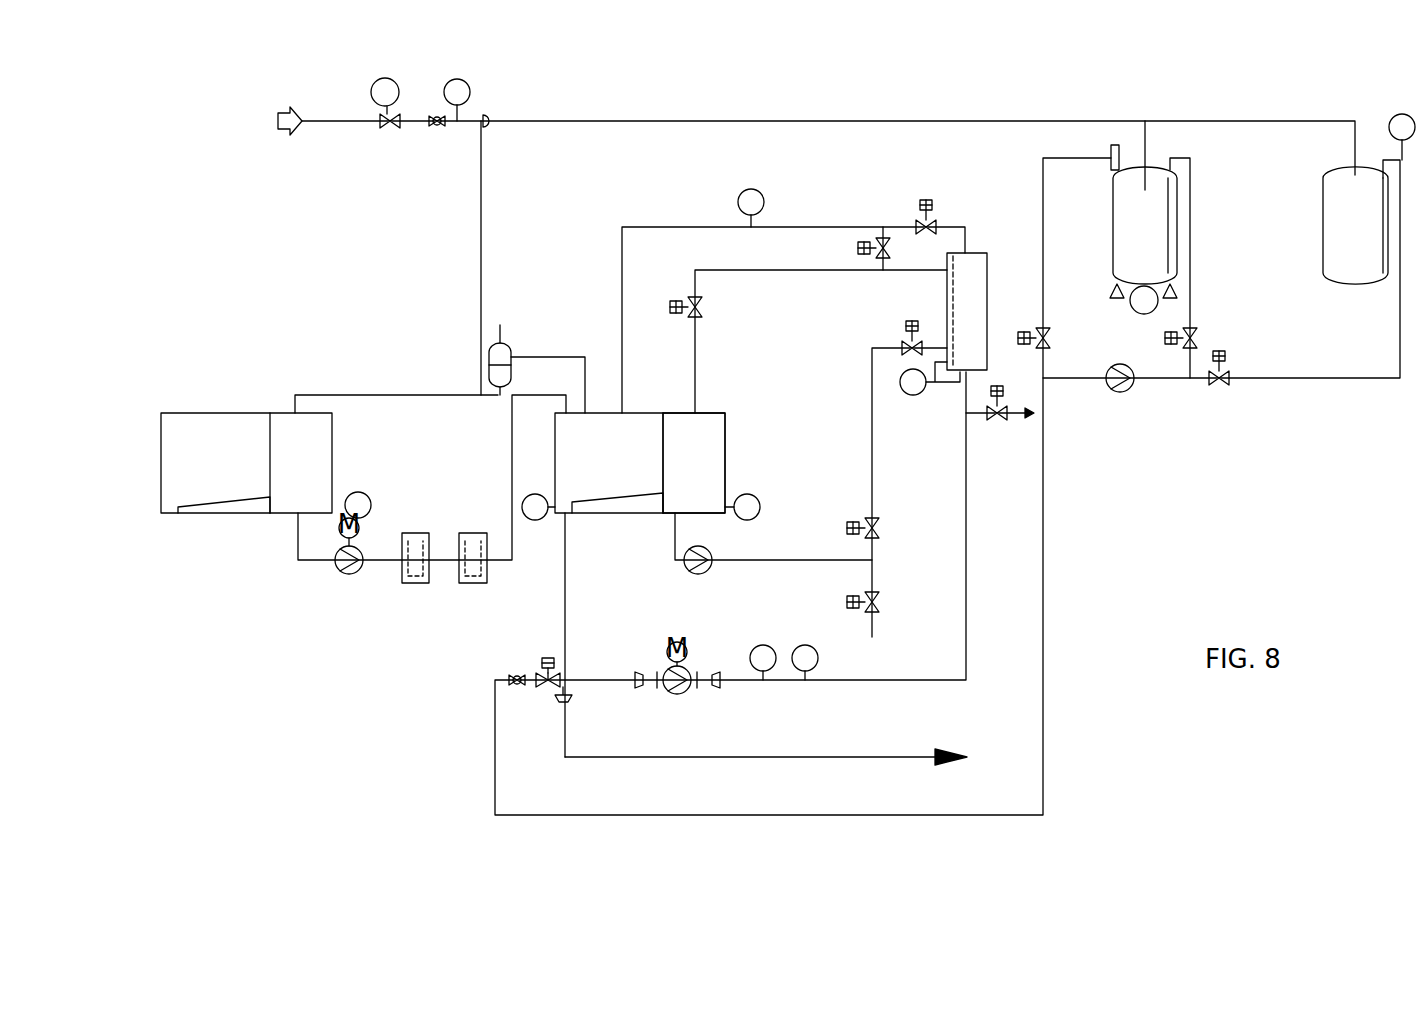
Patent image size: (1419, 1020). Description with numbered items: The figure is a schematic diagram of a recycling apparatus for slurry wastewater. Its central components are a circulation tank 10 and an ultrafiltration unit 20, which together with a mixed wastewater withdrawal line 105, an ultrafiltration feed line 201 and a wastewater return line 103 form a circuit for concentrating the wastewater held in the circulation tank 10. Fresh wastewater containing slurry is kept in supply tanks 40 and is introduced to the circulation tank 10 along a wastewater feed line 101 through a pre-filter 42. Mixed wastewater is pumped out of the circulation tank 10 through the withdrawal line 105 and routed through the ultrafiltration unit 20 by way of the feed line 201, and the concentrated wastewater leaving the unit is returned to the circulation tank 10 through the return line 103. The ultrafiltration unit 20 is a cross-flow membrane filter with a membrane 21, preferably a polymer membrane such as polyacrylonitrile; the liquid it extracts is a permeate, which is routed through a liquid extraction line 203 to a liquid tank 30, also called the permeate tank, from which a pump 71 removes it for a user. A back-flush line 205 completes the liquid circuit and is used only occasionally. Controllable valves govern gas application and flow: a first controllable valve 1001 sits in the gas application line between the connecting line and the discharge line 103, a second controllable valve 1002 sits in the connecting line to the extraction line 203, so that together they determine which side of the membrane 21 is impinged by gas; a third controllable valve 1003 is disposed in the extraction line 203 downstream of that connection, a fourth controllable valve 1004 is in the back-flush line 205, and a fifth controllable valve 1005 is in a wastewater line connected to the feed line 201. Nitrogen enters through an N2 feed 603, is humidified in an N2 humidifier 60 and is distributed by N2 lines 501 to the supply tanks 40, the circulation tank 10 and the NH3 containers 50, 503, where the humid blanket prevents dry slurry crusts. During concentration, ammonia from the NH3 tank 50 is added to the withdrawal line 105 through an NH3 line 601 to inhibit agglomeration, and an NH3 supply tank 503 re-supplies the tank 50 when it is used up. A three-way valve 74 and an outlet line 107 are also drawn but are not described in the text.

The N2 feed 603 is at (276, 118).
The NH3 line 601 is at (568, 118).
The N2 humidifier 60 is at (500, 338).
The supply tank 40 is at (295, 500).
The wastewater feed line 101 is at (512, 445).
The pre-filter 42 is at (470, 582).
The circulation tank 10 is at (643, 437).
The liquid tank 30 is at (708, 455).
The wastewater return line 103 is at (632, 226).
The first controllable valve 1001 is at (932, 220).
The second controllable valve 1002 is at (880, 240).
The third controllable valve 1003 is at (698, 310).
The fourth controllable valve 1004 is at (910, 338).
The fifth controllable valve 1005 is at (1000, 420).
The liquid extraction line 203 is at (895, 268).
The ultrafiltration unit 20 is at (987, 280).
The membrane 21 is at (955, 270).
The back-flush line 205 is at (873, 465).
The pump 71 is at (706, 568).
The ultrafiltration feed line 201 is at (966, 557).
The three-way valve 74 is at (545, 683).
The mixed wastewater withdrawal line 105 is at (560, 615).
The discharge pipe 107 is at (890, 757).
The NH3 tank 50 is at (1152, 190).
The N2 line 501 is at (1043, 417).
The NH3 supply tank 503 is at (1368, 190).